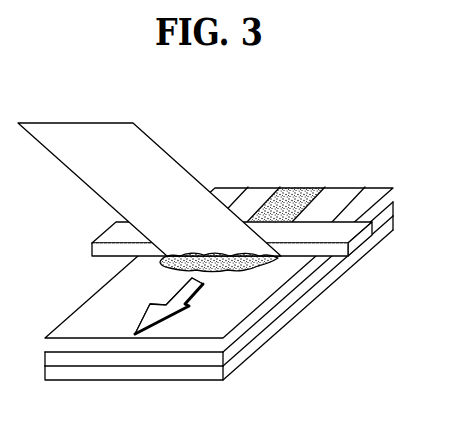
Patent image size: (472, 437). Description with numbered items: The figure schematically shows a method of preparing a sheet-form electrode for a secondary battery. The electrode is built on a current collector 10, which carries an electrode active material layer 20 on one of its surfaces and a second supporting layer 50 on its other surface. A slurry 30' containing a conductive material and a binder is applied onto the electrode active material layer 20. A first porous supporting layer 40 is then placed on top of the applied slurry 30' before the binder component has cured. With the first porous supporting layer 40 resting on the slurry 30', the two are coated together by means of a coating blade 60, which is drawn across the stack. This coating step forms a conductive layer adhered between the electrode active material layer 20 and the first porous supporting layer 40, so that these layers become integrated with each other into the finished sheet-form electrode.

The current collector 10 is at (230, 353).
The electrode active material layer 20 is at (237, 332).
The second supporting layer 50 is at (188, 372).
The first porous supporting layer 40 is at (168, 165).
The coating blade 60 is at (360, 238).
The slurry containing a conductive material and a binder 30' is at (249, 295).